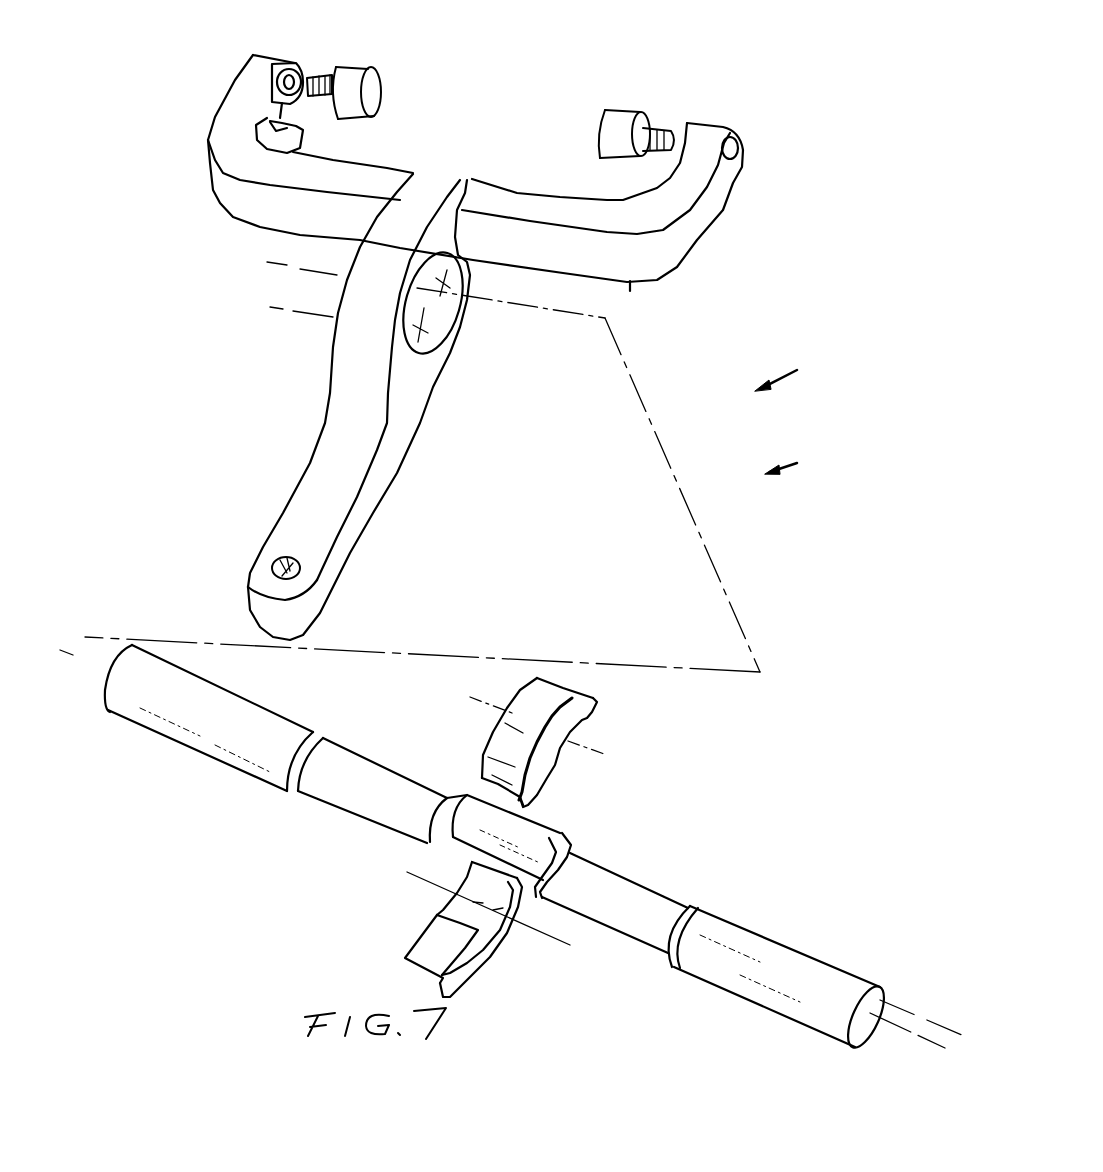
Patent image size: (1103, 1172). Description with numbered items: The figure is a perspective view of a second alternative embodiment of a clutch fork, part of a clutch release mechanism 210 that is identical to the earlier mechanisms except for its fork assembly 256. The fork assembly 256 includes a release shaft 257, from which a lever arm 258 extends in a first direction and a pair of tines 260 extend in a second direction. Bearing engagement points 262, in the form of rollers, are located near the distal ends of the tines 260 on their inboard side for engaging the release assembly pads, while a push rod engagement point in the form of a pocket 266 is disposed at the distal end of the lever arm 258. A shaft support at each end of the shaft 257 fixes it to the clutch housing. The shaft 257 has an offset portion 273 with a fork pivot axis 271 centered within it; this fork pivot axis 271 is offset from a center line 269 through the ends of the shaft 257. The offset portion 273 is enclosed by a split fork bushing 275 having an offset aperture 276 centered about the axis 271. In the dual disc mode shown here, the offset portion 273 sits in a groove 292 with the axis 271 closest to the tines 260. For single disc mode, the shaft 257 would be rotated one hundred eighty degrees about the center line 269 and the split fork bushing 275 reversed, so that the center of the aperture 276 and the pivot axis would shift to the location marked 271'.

The clutch release mechanism 210 is at (796, 361).
The fork assembly 256 is at (806, 448).
The release shaft 257 is at (737, 917).
The lever arm 258 is at (367, 533).
The tines 260 is at (217, 110).
The bearing engagement points 262 is at (593, 130).
The pocket 266 is at (302, 570).
The center line 269 is at (90, 667).
The fork pivot axis 271 is at (507, 495).
The fork pivot axis location (single disc mode) 271' is at (396, 313).
The offset portion 273 is at (463, 898).
The split fork bushing 275 is at (423, 940).
The offset aperture 276 is at (482, 898).
The groove 292 is at (403, 327).